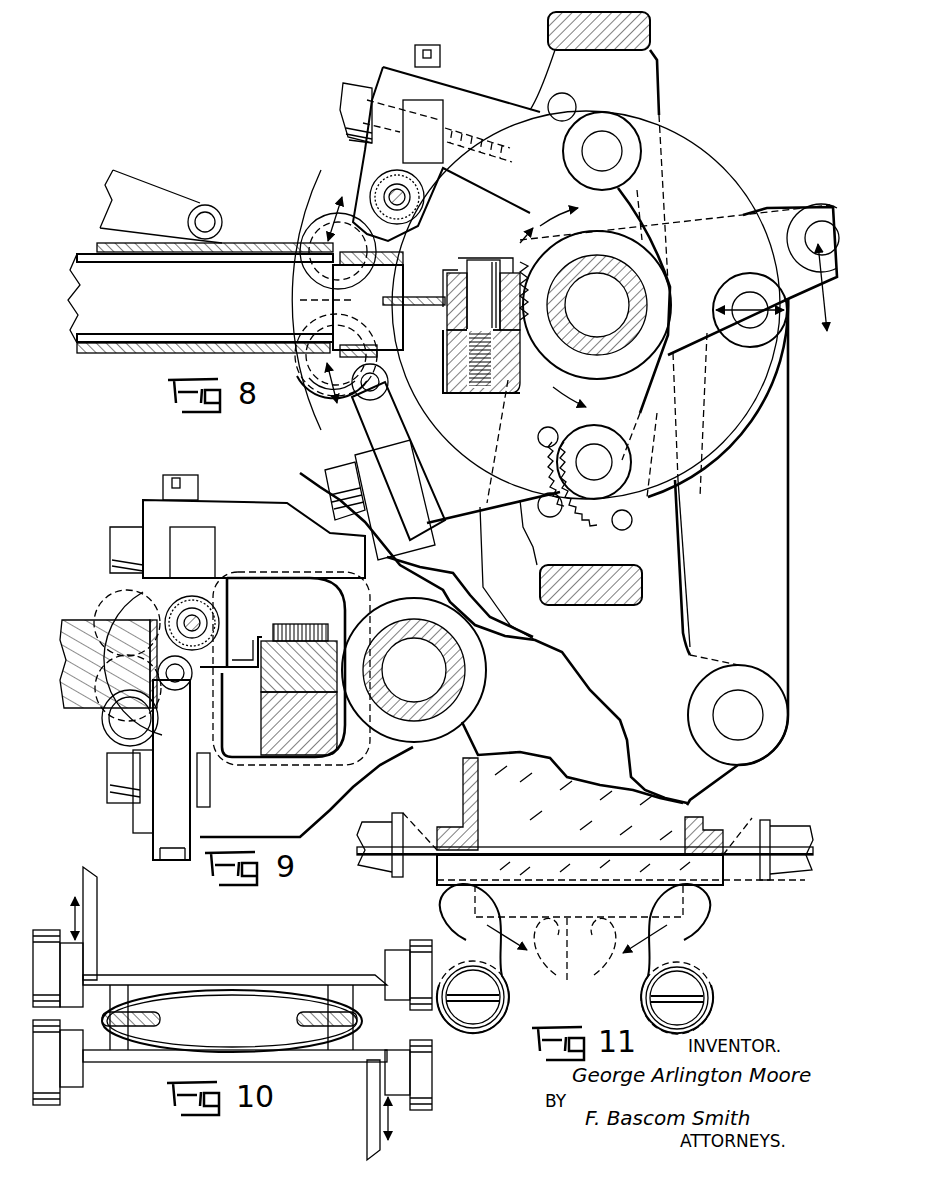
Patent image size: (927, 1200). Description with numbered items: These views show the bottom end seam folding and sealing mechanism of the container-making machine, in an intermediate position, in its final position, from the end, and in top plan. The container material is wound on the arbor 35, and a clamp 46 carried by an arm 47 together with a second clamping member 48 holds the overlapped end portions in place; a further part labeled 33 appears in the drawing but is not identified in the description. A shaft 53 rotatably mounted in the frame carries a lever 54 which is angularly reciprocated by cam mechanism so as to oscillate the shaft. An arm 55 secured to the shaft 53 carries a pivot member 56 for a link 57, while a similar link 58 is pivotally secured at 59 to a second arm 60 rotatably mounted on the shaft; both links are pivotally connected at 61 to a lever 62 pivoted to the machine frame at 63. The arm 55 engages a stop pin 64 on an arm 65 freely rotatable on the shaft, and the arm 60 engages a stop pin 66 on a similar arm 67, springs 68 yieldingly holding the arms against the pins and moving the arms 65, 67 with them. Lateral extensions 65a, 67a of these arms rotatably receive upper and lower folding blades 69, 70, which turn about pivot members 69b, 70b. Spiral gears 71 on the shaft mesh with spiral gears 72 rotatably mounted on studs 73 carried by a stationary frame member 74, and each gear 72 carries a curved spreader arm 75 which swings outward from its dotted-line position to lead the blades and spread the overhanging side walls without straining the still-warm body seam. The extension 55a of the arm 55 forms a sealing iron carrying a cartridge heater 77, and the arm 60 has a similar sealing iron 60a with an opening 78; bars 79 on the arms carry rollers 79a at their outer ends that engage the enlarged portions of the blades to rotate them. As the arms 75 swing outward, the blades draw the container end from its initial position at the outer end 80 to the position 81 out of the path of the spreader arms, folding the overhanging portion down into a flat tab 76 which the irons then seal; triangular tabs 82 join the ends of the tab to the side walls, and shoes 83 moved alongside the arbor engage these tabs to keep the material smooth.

In FIG. 8, the tubular rod 33 is at (210, 340).
In FIG. 10, the tubular rod 33 is at (205, 990).
In FIG. 8, the arbor 35 is at (140, 337).
In FIG. 10, the arbor 35 is at (325, 1030).
In FIG. 8, the clamp 46 is at (240, 243).
In FIG. 8, the arm 47 is at (150, 186).
In FIG. 8, the second clamping member 48 is at (130, 355).
In FIG. 8, the shaft 53 is at (640, 300).
In FIG. 9, the shaft 53 is at (470, 672).
In FIG. 8, the lever 54 is at (775, 210).
In FIG. 8, the arm 55 is at (485, 100).
In FIG. 9, the arm 55 is at (143, 505).
In FIG. 8, the extension constituting a sealing iron 55a is at (420, 228).
In FIG. 9, the extension constituting a sealing iron 55a is at (233, 612).
In FIG. 8, the pivot member 56 is at (605, 145).
In FIG. 8, the link 57 is at (690, 150).
In FIG. 8, the link 58 is at (745, 455).
In FIG. 8, the pivot 59 is at (592, 455).
In FIG. 8, the second arm 60 is at (460, 540).
In FIG. 9, the second arm 60 is at (305, 800).
In FIG. 8, the sealing iron 60a is at (370, 401).
In FIG. 9, the sealing iron 60a is at (205, 722).
In FIG. 8, the pivotal connection 61 is at (748, 290).
In FIG. 8, the lever 62 is at (790, 514).
In FIG. 8, the pivot 63 is at (755, 712).
In FIG. 8, the stop pin 64 is at (565, 105).
In FIG. 8, the arm 65 is at (655, 62).
In FIG. 8, the lateral extension 65a is at (318, 182).
In FIG. 9, the lateral extension 65a is at (118, 590).
In FIG. 10, the lateral extension 65a is at (47, 930).
In FIG. 8, the stop pin 66 is at (551, 517).
In FIG. 8, the arm 67 is at (520, 527).
In FIG. 8, the lateral extension 67a is at (325, 450).
In FIG. 9, the lateral extension 67a is at (110, 742).
In FIG. 10, the lateral extension 67a is at (48, 1110).
In FIG. 8, the springs 68 is at (615, 528).
In FIG. 8, the upper folding blade 69 is at (380, 256).
In FIG. 9, the upper folding blade 69 is at (110, 636).
In FIG. 11, the upper folding blade 69 is at (502, 850).
In FIG. 10, the upper folding blade 69 is at (248, 980).
In FIG. 8, the pivot member 69b is at (318, 212).
In FIG. 9, the pivot member 69b is at (128, 612).
In FIG. 11, the pivot member 69b is at (782, 830).
In FIG. 10, the pivot member 69b is at (405, 975).
In FIG. 8, the lower folding blade 70 is at (385, 362).
In FIG. 9, the lower folding blade 70 is at (100, 700).
In FIG. 10, the lower folding blade 70 is at (290, 1062).
In FIG. 8, the pivot member 70b is at (318, 374).
In FIG. 9, the pivot member 70b is at (125, 745).
In FIG. 10, the pivot member 70b is at (70, 1085).
In FIG. 8, the spiral gears 71 is at (512, 270).
In FIG. 9, the spiral gears 71 is at (352, 645).
In FIG. 8, the spiral gears 72 is at (443, 322).
In FIG. 9, the spiral gears 72 is at (262, 690).
In FIG. 11, the spiral gears 72 is at (708, 980).
In FIG. 8, the studs 73 is at (483, 306).
In FIG. 9, the studs 73 is at (290, 624).
In FIG. 11, the studs 73 is at (700, 1005).
In FIG. 8, the stationary frame member 74 is at (455, 394).
In FIG. 9, the stationary frame member 74 is at (265, 748).
In FIG. 8, the curved arm 75 is at (444, 287).
In FIG. 9, the curved arm 75 is at (240, 655).
In FIG. 11, the curved arm 75 is at (477, 933).
In FIG. 10, the curved arm 75 is at (160, 1020).
In FIG. 8, the extending portion 76 is at (400, 344).
In FIG. 11, the extending portion 76 is at (448, 865).
In FIG. 10, the extending portion 76 is at (135, 990).
In FIG. 8, the cartridge heater 77 is at (424, 201).
In FIG. 9, the cartridge heater 77 is at (194, 610).
In FIG. 8, the opening 78 is at (395, 456).
In FIG. 9, the opening 78 is at (171, 770).
In FIG. 8, the bars 79 is at (380, 521).
In FIG. 9, the bars 79 is at (192, 798).
In FIG. 10, the bars 79 is at (97, 920).
In FIG. 8, the rollers 79a is at (365, 394).
In FIG. 9, the rollers 79a is at (130, 718).
In FIG. 10, the rollers 79a is at (95, 970).
In FIG. 11, the outer end of the container 80 is at (565, 976).
In FIG. 11, the position of the end of the walls 81 is at (580, 888).
In FIG. 11, the triangular tabs 82 is at (440, 850).
In FIG. 11, the shoes 83 is at (461, 812).